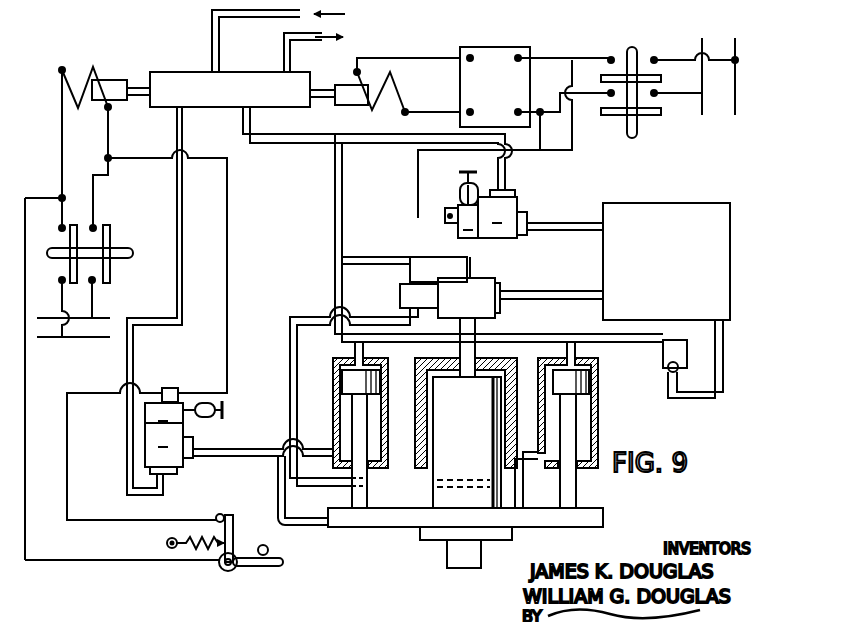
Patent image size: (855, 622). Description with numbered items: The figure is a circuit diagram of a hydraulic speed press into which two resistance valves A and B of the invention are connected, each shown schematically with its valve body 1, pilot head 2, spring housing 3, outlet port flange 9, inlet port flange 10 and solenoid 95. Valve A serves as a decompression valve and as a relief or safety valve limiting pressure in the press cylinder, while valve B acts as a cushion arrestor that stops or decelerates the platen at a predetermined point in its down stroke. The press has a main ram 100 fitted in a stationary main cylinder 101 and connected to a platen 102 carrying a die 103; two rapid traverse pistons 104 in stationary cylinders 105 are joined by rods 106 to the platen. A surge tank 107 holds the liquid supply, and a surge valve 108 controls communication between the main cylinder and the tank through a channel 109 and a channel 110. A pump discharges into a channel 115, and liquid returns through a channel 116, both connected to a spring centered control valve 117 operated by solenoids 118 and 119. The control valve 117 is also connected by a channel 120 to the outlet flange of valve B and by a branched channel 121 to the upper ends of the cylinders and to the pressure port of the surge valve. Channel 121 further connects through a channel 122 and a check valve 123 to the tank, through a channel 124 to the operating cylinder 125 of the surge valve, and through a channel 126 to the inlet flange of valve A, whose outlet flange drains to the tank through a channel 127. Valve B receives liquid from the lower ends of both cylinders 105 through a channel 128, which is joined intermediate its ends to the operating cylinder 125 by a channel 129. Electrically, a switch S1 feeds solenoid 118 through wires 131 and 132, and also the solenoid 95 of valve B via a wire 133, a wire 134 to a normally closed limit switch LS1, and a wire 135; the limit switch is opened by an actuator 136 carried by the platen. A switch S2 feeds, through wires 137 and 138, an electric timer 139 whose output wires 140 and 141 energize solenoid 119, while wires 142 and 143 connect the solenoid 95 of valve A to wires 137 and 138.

The valve body 1 is at (331, 332).
The pilot head 2 is at (311, 314).
The spring housing 3 is at (473, 195).
The outlet port flange 9 is at (527, 232).
The inlet port flange 10 is at (518, 193).
The solenoid 95 is at (447, 208).
The main ram 100 is at (452, 421).
The main cylinder 101 is at (428, 358).
The platen 102 is at (592, 518).
The die 103 is at (450, 557).
The rapid traverse pistons 104 is at (356, 383).
The rapid traverse cylinders 105 is at (345, 427).
The rods 106 is at (355, 497).
The surge tank 107 is at (657, 300).
The surge valve 108 is at (457, 304).
The channel 109 is at (476, 327).
The channel 110 is at (580, 291).
The channel 115 is at (212, 50).
The channel 116 is at (284, 52).
The control valve 117 is at (198, 98).
The solenoid 118 is at (80, 68).
The solenoid 119 is at (400, 98).
The channel 120 is at (184, 139).
The branched channel 121 is at (335, 168).
The channel 122 is at (723, 360).
The check valve 123 is at (663, 355).
The channel 124 is at (410, 272).
The operating cylinder 125 is at (400, 296).
The channel 126 is at (400, 143).
The channel 127 is at (548, 223).
The channel 128 is at (275, 452).
The channel 129 is at (288, 343).
The wire 131 is at (62, 127).
The wire 132 is at (108, 128).
The wire 133 is at (227, 218).
The wire 134 is at (67, 470).
The wire 135 is at (88, 560).
The actuator 136 is at (278, 500).
The wire 137 is at (545, 58).
The wire 138 is at (590, 93).
The electric timer 139 is at (485, 114).
The wire 140 is at (430, 58).
The wire 141 is at (460, 112).
The wire 142 is at (575, 152).
The wire 143 is at (418, 185).
The switch S1 is at (125, 240).
The switch S2 is at (647, 118).
The limit switch LS1 is at (238, 573).
The resistance valve A is at (428, 224).
The resistance valve B is at (220, 426).